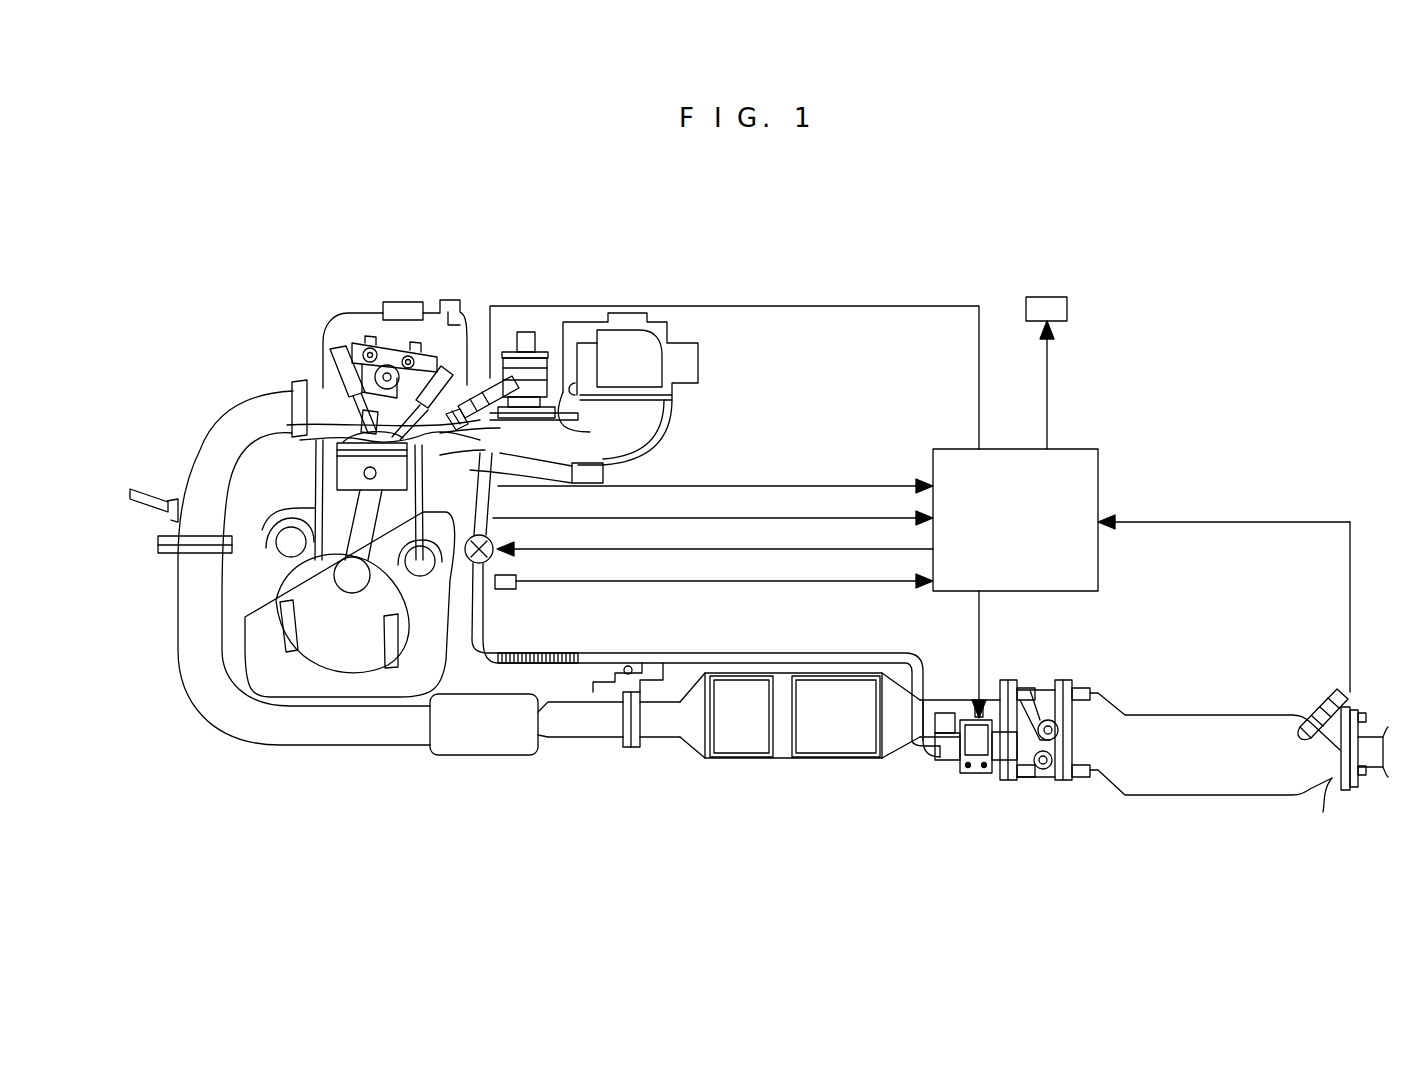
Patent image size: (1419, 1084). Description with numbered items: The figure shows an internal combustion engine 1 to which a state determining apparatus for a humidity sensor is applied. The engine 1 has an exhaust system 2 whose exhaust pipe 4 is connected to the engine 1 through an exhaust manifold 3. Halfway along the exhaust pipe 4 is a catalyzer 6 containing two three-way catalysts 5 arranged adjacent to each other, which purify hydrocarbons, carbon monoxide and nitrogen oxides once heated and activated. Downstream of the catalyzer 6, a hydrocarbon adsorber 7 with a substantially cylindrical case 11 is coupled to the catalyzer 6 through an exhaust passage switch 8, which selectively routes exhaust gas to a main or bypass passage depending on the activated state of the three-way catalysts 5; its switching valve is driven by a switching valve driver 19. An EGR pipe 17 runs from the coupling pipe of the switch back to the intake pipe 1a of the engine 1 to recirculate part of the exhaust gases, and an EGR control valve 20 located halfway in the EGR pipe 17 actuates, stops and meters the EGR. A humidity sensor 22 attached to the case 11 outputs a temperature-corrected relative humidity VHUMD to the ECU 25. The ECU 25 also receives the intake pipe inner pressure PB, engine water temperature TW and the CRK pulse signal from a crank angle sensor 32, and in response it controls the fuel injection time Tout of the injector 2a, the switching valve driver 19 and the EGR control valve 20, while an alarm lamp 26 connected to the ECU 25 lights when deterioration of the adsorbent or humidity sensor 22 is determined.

The internal combustion engine 1 is at (360, 287).
The intake pipe 1a is at (552, 445).
The exhaust system 2 is at (451, 778).
The injector 2a is at (486, 374).
The exhaust manifold 3 is at (293, 387).
The exhaust pipe 4 is at (248, 738).
The three-way catalysts 5 is at (817, 732).
The catalyzer 6 is at (745, 820).
The hydrocarbon adsorber 7 is at (1224, 672).
The exhaust passage switch 8 is at (1042, 672).
The case 11 is at (1258, 713).
The EGR pipe 17 is at (933, 768).
The switching valve driver 19 is at (985, 778).
The EGR control valve 20 is at (498, 555).
The humidity sensor 22 is at (1323, 762).
The ECU 25 is at (1080, 449).
The alarm lamp 26 is at (1043, 297).
The crank angle sensor 32 is at (509, 591).